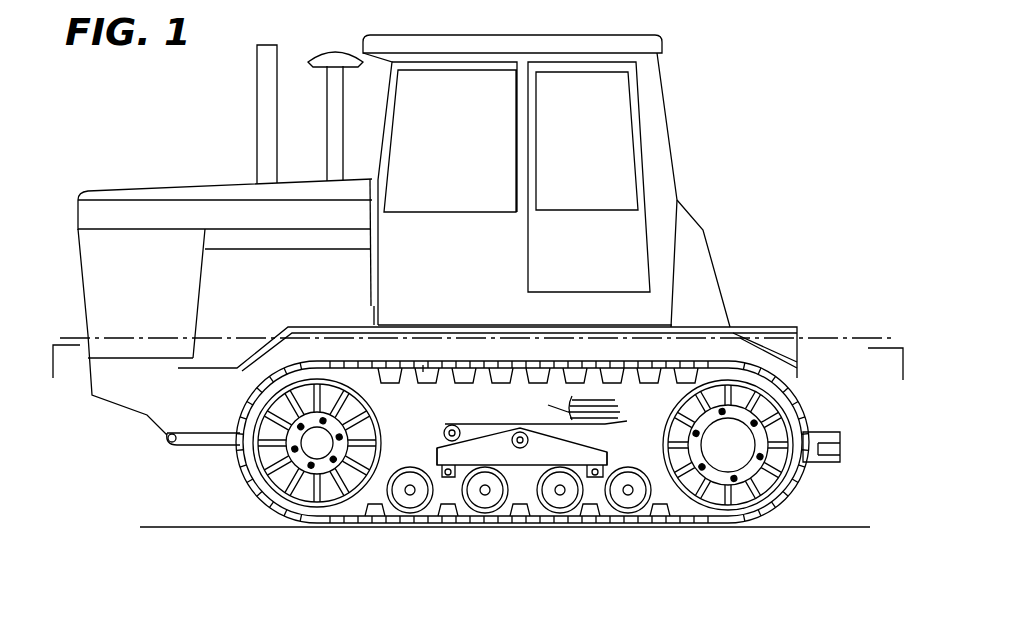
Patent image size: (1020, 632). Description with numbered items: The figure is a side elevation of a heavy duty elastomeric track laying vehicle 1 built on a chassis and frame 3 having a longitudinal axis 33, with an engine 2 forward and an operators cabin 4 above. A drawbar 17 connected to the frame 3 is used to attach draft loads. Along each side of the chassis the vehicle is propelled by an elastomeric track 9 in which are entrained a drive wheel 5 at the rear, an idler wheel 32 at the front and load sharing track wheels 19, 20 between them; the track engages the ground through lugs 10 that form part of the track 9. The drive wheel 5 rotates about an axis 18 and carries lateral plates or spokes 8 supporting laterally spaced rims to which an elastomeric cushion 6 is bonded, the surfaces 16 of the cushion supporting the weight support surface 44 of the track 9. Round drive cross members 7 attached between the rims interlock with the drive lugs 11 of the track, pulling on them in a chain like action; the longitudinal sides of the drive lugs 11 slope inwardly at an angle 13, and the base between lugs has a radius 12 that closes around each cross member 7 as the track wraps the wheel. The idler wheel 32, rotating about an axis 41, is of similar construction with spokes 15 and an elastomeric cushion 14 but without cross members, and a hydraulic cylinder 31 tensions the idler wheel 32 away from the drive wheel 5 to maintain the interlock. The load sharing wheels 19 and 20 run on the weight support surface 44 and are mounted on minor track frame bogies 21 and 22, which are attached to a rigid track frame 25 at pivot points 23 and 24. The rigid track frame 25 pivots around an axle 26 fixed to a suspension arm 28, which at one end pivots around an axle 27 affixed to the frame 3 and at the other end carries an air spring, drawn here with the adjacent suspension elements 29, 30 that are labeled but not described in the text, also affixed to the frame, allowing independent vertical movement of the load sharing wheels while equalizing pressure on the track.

The track laying vehicle 1 is at (150, 153).
The engine 2 is at (290, 302).
The chassis and frame 3 is at (777, 365).
The operators cabin 4 is at (652, 92).
The drive wheel 5 is at (764, 406).
The elastomeric cushion 6 is at (773, 423).
The drive cross members 7 is at (787, 433).
The spokes 8 is at (773, 507).
The elastomeric track 9 is at (773, 510).
The lugs 10 is at (717, 530).
The drive lugs 11 is at (648, 360).
The radius 12 is at (375, 380).
The angle 13 is at (447, 383).
The elastomeric cushion 14 is at (298, 510).
The spokes 15 is at (262, 500).
The support surfaces 16 is at (330, 520).
The drawbar 17 is at (840, 447).
The axis 18 is at (797, 462).
The load sharing track wheels 19 is at (400, 510).
The load sharing track wheels 20 is at (560, 505).
The minor track frame bogie 21 is at (598, 482).
The minor track frame bogie 22 is at (437, 505).
The pivot point 23 is at (438, 448).
The pivot point 24 is at (592, 455).
The rigid track frame 25 is at (536, 458).
The axle 26 is at (507, 405).
The axle 27 is at (423, 365).
The suspension arm 28 is at (447, 393).
The pivot link 29 is at (548, 405).
The leaf spring 30 is at (573, 395).
The hydraulic cylinder 31 is at (205, 445).
The idler wheel 32 is at (317, 443).
The longitudinal axis 33 is at (808, 338).
The axis of rotation 41 is at (265, 493).
The weight support surface 44 is at (372, 520).